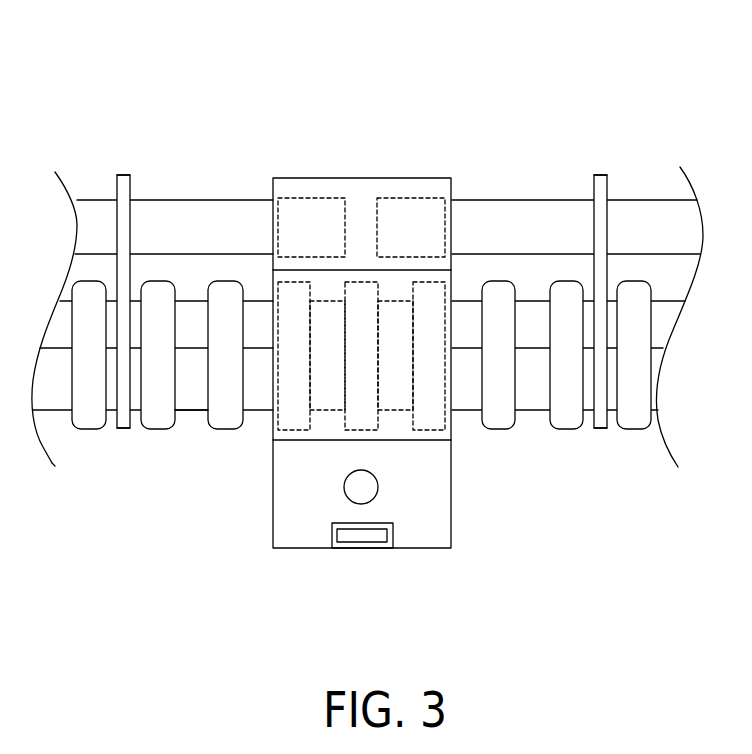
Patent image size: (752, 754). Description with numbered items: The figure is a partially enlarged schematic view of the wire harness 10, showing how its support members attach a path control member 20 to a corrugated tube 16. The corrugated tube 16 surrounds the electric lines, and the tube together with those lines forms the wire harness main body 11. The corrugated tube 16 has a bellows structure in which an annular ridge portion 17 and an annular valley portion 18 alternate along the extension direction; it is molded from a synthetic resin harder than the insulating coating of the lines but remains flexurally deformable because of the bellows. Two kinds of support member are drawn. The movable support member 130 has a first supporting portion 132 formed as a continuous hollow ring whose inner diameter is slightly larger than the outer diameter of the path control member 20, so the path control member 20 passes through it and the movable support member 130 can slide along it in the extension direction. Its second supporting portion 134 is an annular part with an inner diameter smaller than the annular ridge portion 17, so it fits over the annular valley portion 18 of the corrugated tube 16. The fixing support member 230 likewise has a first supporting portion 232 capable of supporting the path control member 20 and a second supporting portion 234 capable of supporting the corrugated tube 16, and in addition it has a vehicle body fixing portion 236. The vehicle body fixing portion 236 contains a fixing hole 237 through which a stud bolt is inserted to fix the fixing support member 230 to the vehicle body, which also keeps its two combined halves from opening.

The wire harness 10 is at (217, 88).
The wire harness main body 11 is at (563, 432).
The corrugated tube 16 is at (222, 432).
The annular ridge portion 17 is at (158, 431).
The annular valley portion 18 is at (195, 414).
The path control member 20 is at (241, 199).
The movable support member 130 is at (124, 172).
The first supporting portion 132 is at (131, 183).
The second supporting portion 134 is at (118, 431).
The fixing support member 230 is at (401, 397).
The first supporting portion 232 is at (452, 189).
The second supporting portion 234 is at (452, 427).
The vehicle body fixing portion 236 is at (363, 536).
The fixing hole 237 is at (356, 489).